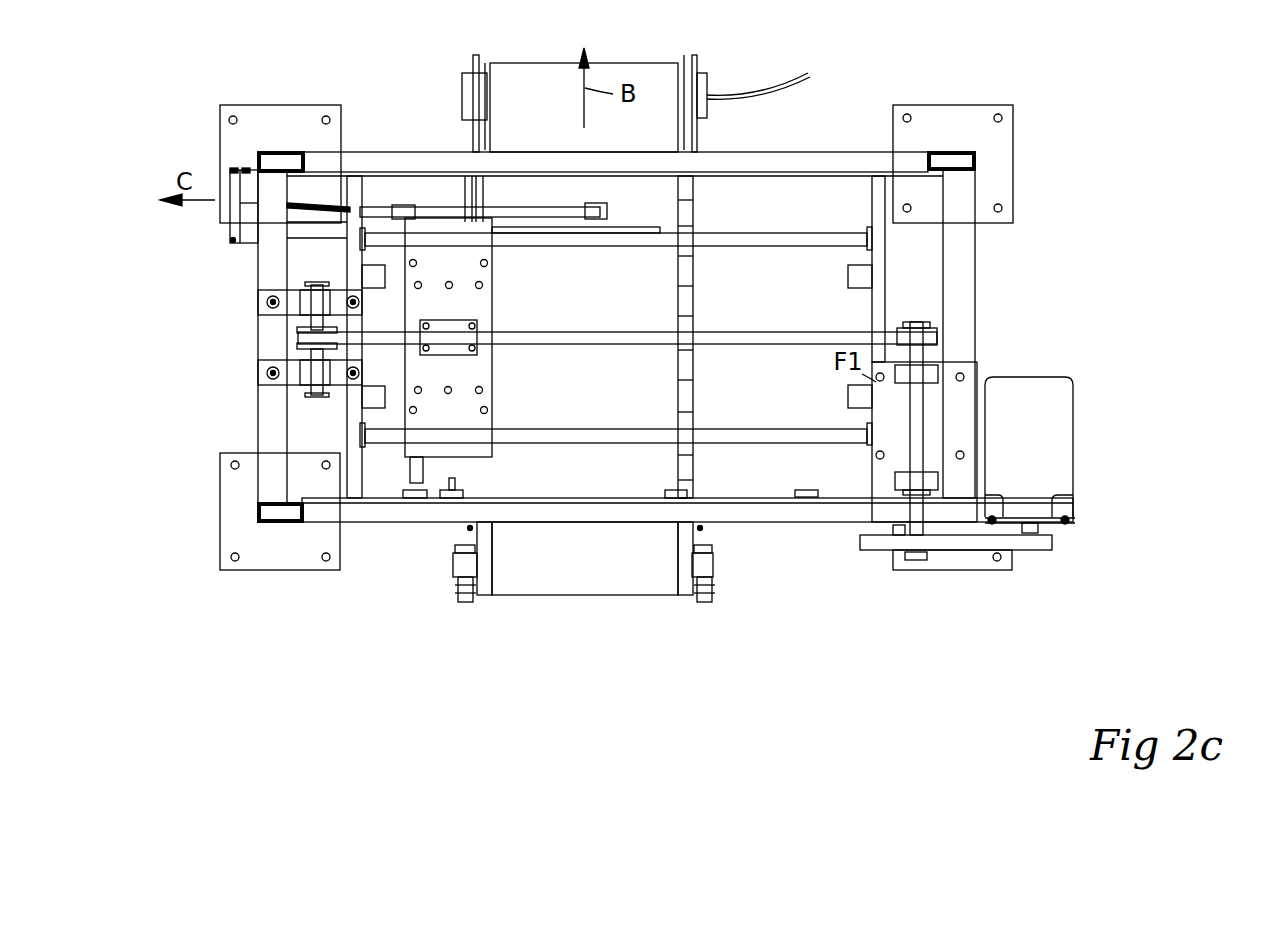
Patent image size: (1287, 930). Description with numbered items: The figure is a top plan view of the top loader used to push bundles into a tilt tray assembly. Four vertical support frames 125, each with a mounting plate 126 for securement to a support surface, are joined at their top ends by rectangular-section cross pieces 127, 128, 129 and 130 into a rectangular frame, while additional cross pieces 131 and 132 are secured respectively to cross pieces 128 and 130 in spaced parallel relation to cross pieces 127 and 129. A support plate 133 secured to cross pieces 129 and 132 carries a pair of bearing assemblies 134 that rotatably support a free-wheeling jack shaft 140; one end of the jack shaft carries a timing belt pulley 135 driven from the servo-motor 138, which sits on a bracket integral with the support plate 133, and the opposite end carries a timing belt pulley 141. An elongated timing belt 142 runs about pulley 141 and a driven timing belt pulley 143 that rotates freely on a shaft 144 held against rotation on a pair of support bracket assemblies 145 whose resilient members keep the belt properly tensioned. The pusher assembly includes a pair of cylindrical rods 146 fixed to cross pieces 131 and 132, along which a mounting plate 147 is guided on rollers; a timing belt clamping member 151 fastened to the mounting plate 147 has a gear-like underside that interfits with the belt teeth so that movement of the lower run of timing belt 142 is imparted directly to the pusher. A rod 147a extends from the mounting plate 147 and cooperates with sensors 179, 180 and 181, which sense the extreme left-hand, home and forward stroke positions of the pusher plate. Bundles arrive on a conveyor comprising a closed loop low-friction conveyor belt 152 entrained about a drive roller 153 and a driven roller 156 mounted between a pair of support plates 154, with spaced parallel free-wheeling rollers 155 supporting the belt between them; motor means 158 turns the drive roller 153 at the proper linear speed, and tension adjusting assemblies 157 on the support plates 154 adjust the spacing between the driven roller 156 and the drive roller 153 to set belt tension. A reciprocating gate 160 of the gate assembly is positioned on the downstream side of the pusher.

The support frame 125 is at (281, 520).
The mounting plate 126 is at (278, 112).
The cross piece 127 is at (262, 265).
The cross piece 128 is at (410, 156).
The cross piece 129 is at (968, 272).
The cross piece 130 is at (815, 515).
The cross piece 131 is at (352, 248).
The cross piece 132 is at (878, 254).
The support plate 133 is at (972, 400).
The bearing assembly 134 is at (898, 385).
The timing belt pulley 135 is at (955, 552).
The servo-motor 138 is at (1055, 430).
The jack shaft 140 is at (920, 442).
The timing belt pulley 141 is at (935, 325).
The timing belt 142 is at (752, 330).
The timing belt pulley 143 is at (298, 330).
The shaft 144 is at (310, 360).
The support bracket assembly 145 is at (290, 295).
The cylindrical rod 146 is at (718, 240).
The mounting plate 147 is at (480, 298).
The rod 147a is at (448, 437).
The timing belt clamping member 151 is at (455, 352).
The conveyor belt 152 is at (617, 585).
The drive roller 153 is at (688, 62).
The support plate 154 is at (468, 602).
The roller 155 is at (690, 182).
The driven roller 156 is at (484, 597).
The tension adjusting assembly 157 is at (452, 567).
The motor means 158 is at (710, 80).
The reciprocating gate 160 is at (625, 228).
The sensor 179 is at (408, 492).
The sensor 180 is at (445, 478).
The sensor 181 is at (668, 490).